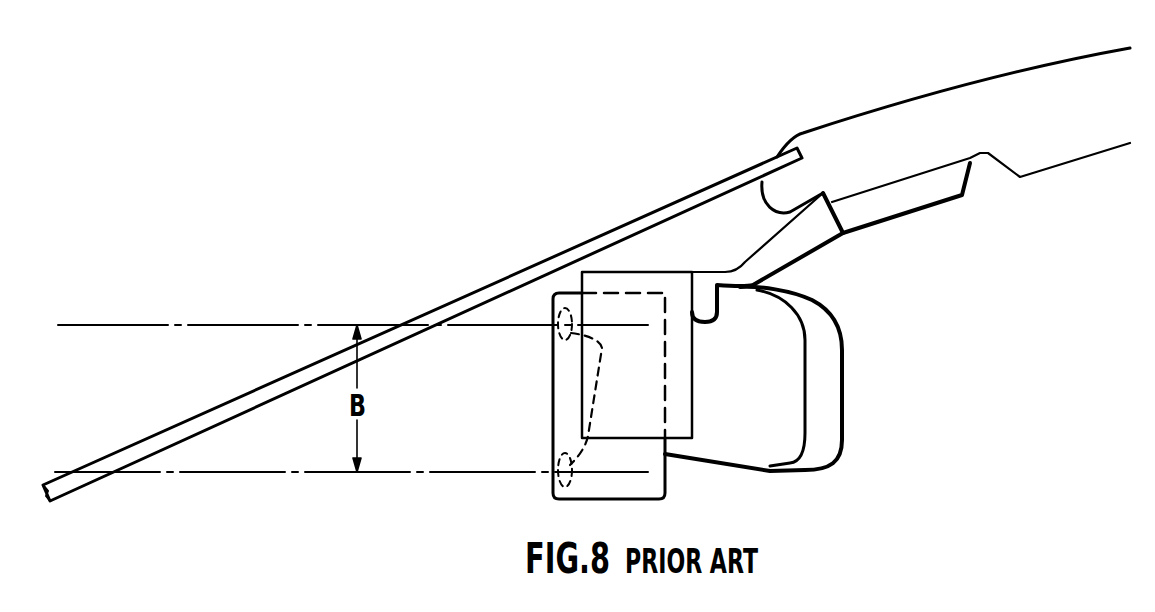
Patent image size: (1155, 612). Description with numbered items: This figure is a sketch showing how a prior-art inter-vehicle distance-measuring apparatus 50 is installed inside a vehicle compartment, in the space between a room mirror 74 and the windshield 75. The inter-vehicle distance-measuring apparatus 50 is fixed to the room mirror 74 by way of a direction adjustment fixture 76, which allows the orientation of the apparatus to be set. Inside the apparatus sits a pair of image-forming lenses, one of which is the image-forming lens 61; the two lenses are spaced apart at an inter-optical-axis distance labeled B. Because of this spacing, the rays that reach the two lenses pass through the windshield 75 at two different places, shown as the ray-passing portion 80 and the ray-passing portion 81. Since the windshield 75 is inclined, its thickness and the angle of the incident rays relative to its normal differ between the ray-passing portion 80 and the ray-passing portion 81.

The inter-vehicle distance-measuring apparatus 50 is at (652, 484).
The image-forming lens 61 is at (588, 397).
The room mirror 74 is at (795, 363).
The windshield 75 is at (685, 200).
The direction adjustment fixture 76 is at (595, 282).
The ray-passing portion 80 is at (407, 324).
The ray-passing portion 81 is at (82, 473).